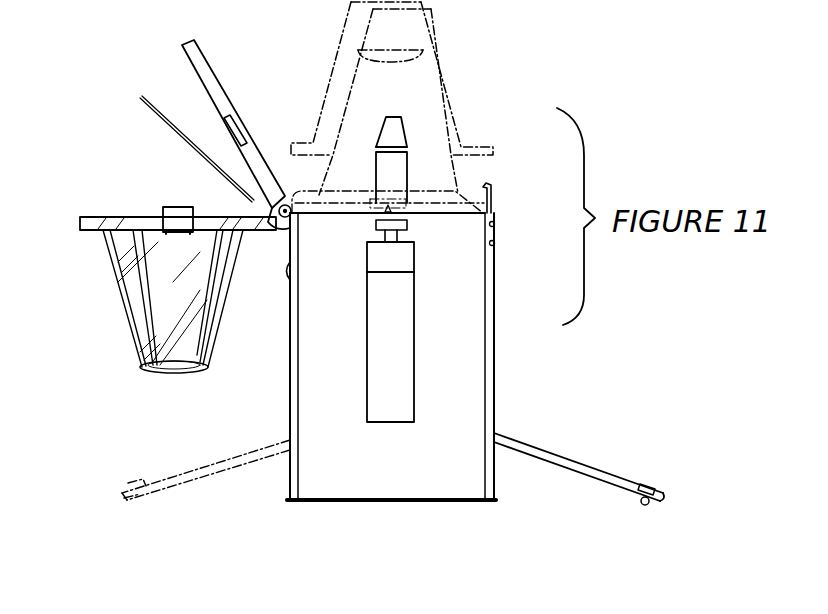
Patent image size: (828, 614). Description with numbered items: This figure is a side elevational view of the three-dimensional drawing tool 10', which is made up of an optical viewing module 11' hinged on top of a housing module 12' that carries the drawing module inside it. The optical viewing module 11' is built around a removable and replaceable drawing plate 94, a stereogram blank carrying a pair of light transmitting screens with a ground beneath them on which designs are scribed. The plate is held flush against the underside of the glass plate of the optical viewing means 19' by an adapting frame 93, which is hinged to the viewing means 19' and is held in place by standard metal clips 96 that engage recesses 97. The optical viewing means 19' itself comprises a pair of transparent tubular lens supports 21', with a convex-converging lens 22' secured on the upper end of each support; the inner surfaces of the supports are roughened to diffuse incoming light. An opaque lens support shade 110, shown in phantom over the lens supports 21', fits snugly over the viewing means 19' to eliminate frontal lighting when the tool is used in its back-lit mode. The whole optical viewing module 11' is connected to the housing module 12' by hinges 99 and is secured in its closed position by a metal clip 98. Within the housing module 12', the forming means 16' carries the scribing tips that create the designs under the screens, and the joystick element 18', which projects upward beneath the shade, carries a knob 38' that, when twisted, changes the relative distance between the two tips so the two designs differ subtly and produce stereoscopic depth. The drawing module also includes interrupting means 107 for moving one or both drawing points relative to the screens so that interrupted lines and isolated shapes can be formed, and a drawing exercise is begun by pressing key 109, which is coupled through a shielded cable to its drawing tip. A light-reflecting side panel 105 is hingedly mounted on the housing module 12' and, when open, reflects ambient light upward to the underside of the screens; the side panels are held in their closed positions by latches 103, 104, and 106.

The three-dimensional drawing tool 10' is at (625, 93).
The optical viewing module 11' is at (57, 102).
The housing module 12' is at (391, 376).
The forming means 16' is at (354, 225).
The nozzle 18' is at (460, 174).
The optical viewing means 19' is at (113, 298).
The lens support 21' is at (234, 298).
The lens 22' is at (153, 389).
The knob 38' is at (383, 108).
The adapting frame 93 is at (205, 62).
The drawing plate 94 is at (131, 89).
The metal clip 96 is at (165, 207).
The recess 97 is at (238, 112).
The metal clip 98 is at (495, 206).
The hinge 99 is at (283, 222).
The latch 103 is at (648, 482).
The latch 104 is at (628, 497).
The side panel 105 is at (200, 470).
The latch 106 is at (288, 273).
The interrupting means 107 is at (361, 360).
The key 109 is at (404, 226).
The lens support shade 110 is at (448, 67).